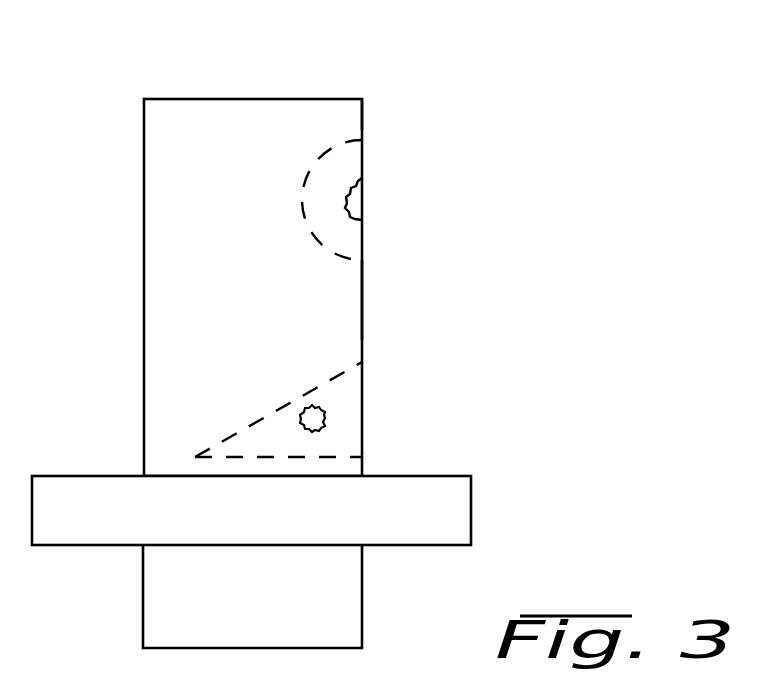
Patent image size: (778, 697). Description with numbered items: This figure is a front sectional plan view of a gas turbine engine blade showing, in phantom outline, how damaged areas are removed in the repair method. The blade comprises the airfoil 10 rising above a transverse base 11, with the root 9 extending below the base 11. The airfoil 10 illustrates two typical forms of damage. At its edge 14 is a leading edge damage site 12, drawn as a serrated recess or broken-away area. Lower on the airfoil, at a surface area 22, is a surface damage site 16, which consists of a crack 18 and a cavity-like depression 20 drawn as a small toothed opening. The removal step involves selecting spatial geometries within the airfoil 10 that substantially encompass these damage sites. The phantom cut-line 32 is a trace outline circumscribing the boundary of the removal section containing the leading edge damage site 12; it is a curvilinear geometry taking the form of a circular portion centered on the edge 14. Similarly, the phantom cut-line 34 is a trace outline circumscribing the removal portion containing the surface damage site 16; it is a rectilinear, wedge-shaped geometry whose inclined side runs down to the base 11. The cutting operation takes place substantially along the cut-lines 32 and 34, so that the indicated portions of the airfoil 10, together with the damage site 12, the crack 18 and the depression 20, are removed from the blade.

The airfoil 10 is at (347, 82).
The edge 14 is at (362, 110).
The phantom cut-line 32 is at (312, 163).
The leading edge damage site 12 is at (372, 199).
The surface area 22 is at (340, 298).
The phantom cut-line 34 is at (318, 390).
The crack 18 is at (314, 444).
The cavity-like depression 20 is at (326, 405).
The surface damage site 16 is at (345, 418).
The base 11 is at (471, 502).
The root 9 is at (362, 598).